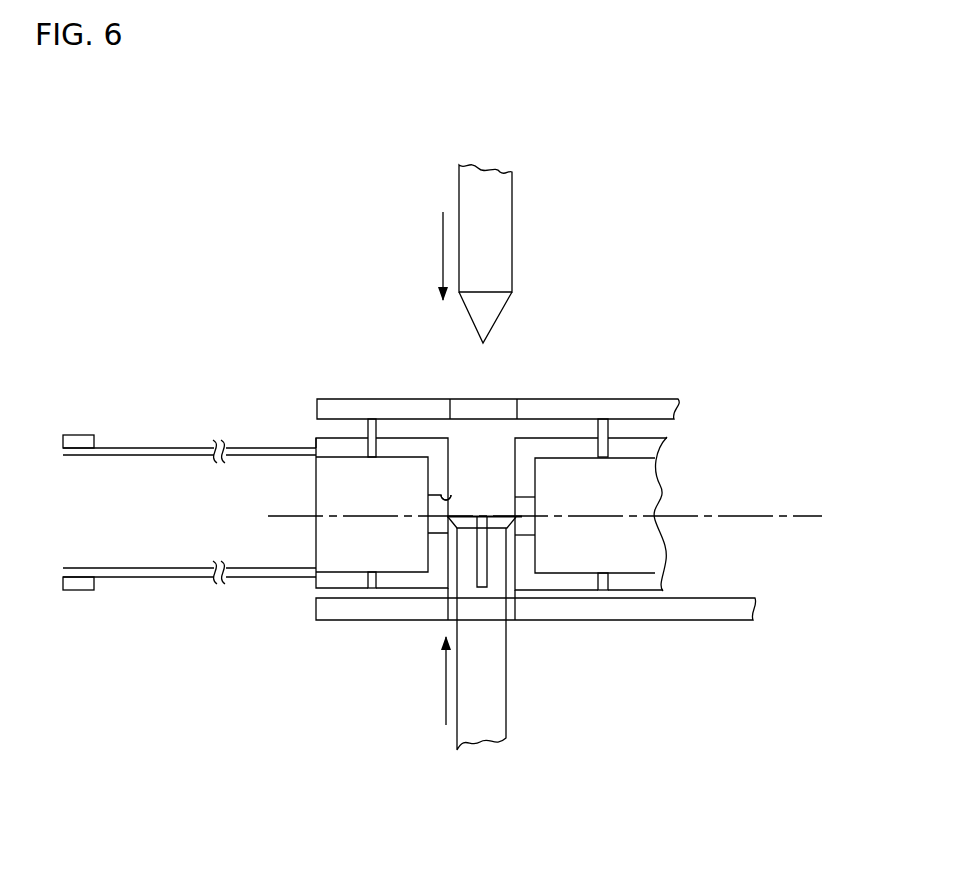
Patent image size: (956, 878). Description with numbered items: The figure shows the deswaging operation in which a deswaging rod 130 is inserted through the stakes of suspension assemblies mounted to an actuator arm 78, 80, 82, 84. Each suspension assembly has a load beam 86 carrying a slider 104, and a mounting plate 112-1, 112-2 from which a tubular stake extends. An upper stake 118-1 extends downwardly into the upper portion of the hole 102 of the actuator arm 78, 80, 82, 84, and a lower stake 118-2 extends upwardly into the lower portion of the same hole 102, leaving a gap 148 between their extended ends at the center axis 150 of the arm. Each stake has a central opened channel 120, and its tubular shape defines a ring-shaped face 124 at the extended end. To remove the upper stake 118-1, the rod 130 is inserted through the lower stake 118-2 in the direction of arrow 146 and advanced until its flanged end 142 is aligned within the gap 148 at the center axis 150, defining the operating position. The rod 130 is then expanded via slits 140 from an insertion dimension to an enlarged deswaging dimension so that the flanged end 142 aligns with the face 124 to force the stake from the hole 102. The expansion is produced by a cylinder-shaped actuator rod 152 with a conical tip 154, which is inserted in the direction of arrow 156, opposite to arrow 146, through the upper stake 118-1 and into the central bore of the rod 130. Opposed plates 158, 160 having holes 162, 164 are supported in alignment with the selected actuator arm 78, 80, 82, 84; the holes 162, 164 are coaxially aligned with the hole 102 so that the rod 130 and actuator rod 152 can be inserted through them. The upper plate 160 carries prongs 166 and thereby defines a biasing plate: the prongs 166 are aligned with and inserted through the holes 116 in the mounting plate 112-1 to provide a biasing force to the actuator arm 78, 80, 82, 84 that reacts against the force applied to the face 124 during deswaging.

The actuator rod 152 is at (521, 251).
The conical tip 154 is at (488, 313).
The arrow 156 is at (442, 226).
The plate 160 is at (638, 407).
The hole 164 is at (520, 407).
The prongs 166 is at (372, 423).
The channel 120 is at (447, 476).
The hole 102 is at (429, 501).
The ring-shaped face 124 is at (450, 499).
The holes 116 is at (365, 449).
The load beam 86 is at (243, 446).
The slider 104 is at (75, 433).
The flanged end 142 is at (468, 515).
The slits 140 is at (483, 555).
The deswaging rod 130 is at (493, 715).
The mounting plate 112-1 is at (655, 447).
The mounting plate 112-2 is at (660, 578).
The upper stake 118-1 is at (530, 478).
The lower stake 118-2 is at (525, 559).
The gap 148 is at (539, 503).
The actuator arm 78 is at (752, 514).
The actuator arm 80 is at (752, 514).
The actuator arm 82 is at (752, 514).
The actuator arm 84 is at (665, 501).
The center axis 150 is at (748, 517).
The plate 158 is at (691, 624).
The hole 162 is at (447, 623).
The arrow 146 is at (445, 672).